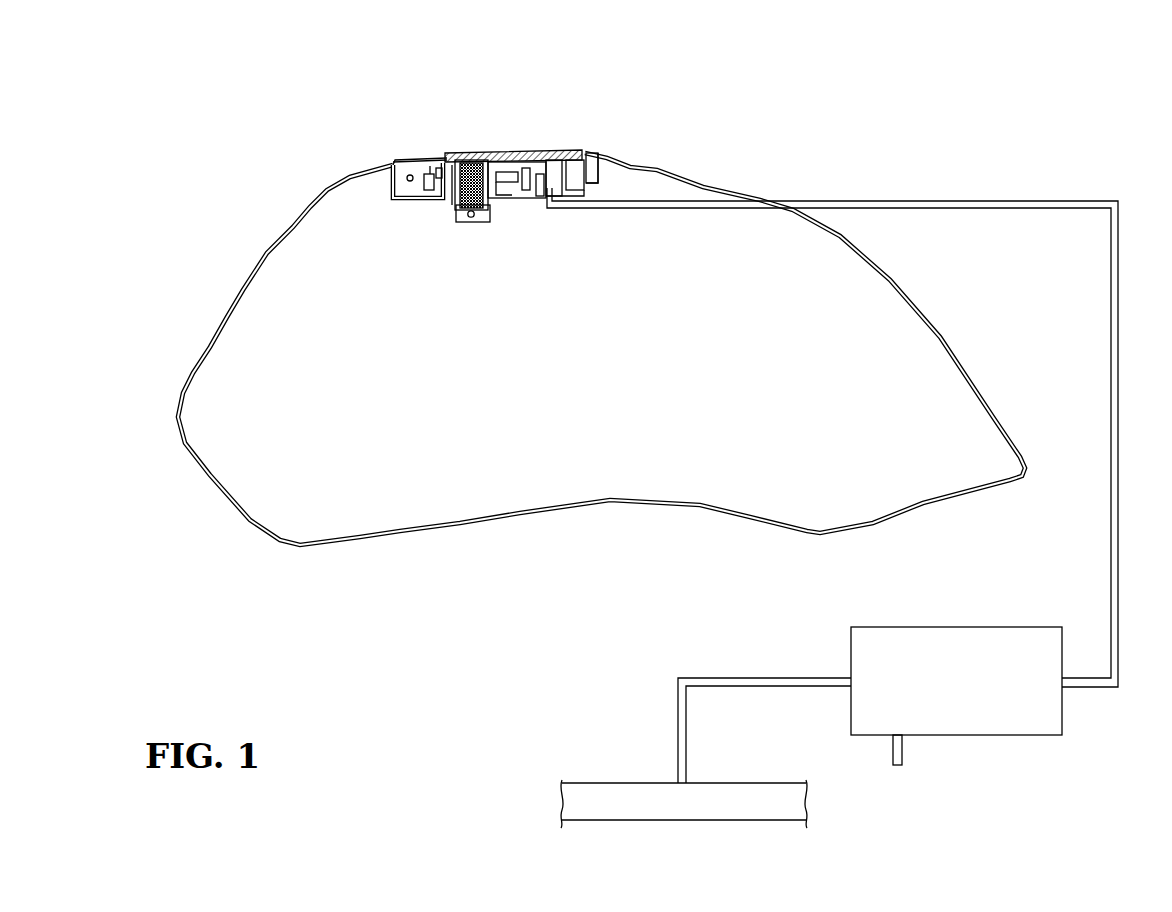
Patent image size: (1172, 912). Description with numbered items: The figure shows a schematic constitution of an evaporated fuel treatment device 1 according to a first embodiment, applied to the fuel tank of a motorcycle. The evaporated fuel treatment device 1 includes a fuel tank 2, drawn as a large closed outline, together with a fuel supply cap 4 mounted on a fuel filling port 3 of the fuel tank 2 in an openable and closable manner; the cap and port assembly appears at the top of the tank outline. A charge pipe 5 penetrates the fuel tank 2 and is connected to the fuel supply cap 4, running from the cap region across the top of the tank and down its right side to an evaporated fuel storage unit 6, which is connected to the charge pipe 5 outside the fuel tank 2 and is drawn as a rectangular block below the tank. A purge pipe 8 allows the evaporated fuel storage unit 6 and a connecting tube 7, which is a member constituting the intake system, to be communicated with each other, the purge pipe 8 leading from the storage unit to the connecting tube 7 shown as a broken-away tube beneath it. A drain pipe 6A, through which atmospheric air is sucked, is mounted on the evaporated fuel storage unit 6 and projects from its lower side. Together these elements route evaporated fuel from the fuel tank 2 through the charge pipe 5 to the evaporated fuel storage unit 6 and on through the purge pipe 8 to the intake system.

The evaporated fuel treatment device 1 is at (881, 126).
The fuel tank 2 is at (656, 170).
The fuel filling port 3 is at (454, 206).
The fuel supply cap 4 is at (525, 146).
The charge pipe 5 is at (1000, 201).
The evaporated fuel storage unit 6 is at (980, 627).
The drain pipe 6A is at (904, 755).
The connecting tube 7 is at (755, 783).
The purge pipe 8 is at (727, 678).